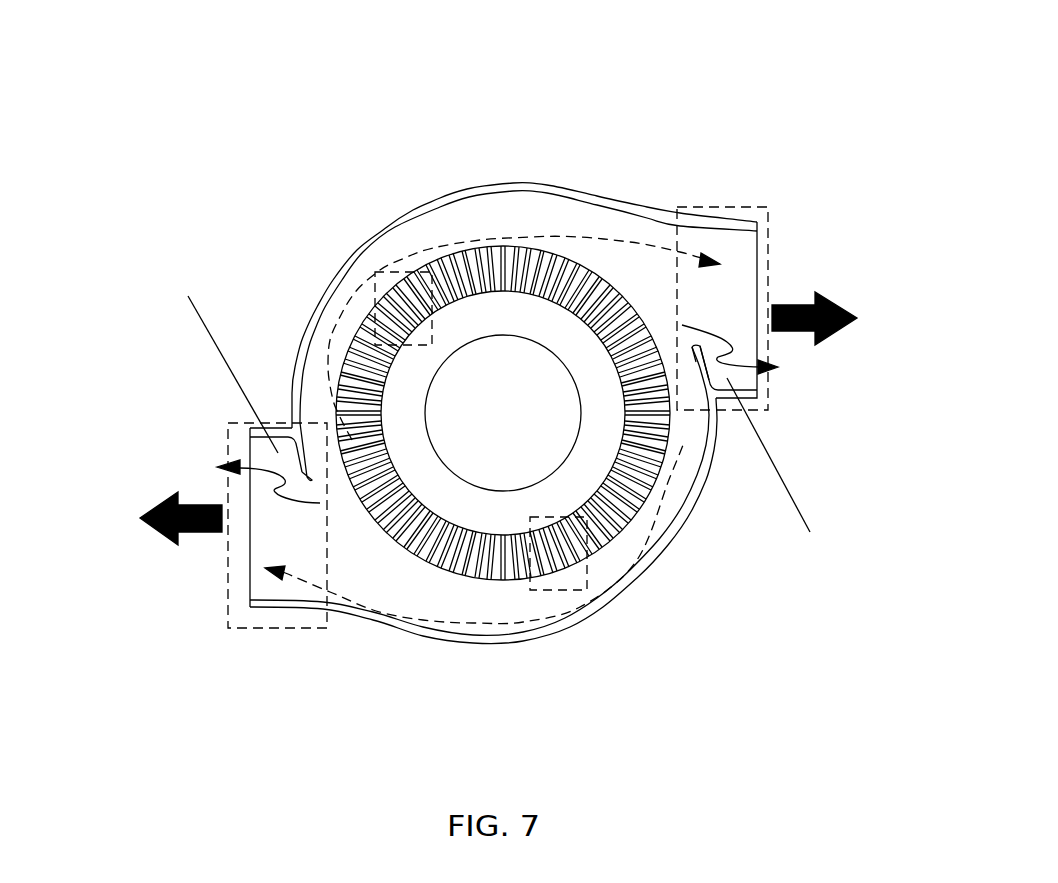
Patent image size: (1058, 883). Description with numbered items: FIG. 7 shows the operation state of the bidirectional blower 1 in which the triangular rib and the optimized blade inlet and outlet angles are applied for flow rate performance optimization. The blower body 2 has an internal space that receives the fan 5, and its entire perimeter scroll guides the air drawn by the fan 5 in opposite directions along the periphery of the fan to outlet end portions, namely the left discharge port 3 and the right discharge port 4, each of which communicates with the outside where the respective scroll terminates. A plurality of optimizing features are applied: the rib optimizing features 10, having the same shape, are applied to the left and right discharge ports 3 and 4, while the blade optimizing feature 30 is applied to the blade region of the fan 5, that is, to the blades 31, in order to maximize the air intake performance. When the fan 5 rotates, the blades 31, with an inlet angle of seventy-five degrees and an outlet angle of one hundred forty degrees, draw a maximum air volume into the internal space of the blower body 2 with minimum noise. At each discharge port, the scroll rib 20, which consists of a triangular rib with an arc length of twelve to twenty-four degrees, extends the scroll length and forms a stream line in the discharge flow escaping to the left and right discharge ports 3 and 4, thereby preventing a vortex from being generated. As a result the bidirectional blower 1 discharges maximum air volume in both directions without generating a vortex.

The bidirectional blower 1 is at (193, 141).
The blower body 2 is at (595, 618).
The left discharge port 3 is at (271, 588).
The right discharge port 4 is at (743, 250).
The fan 5 is at (508, 320).
The rib optimizing feature 10 is at (228, 570).
The scroll rib 20 is at (300, 470).
The blade optimizing feature 30 is at (378, 270).
The blade 31 is at (407, 300).